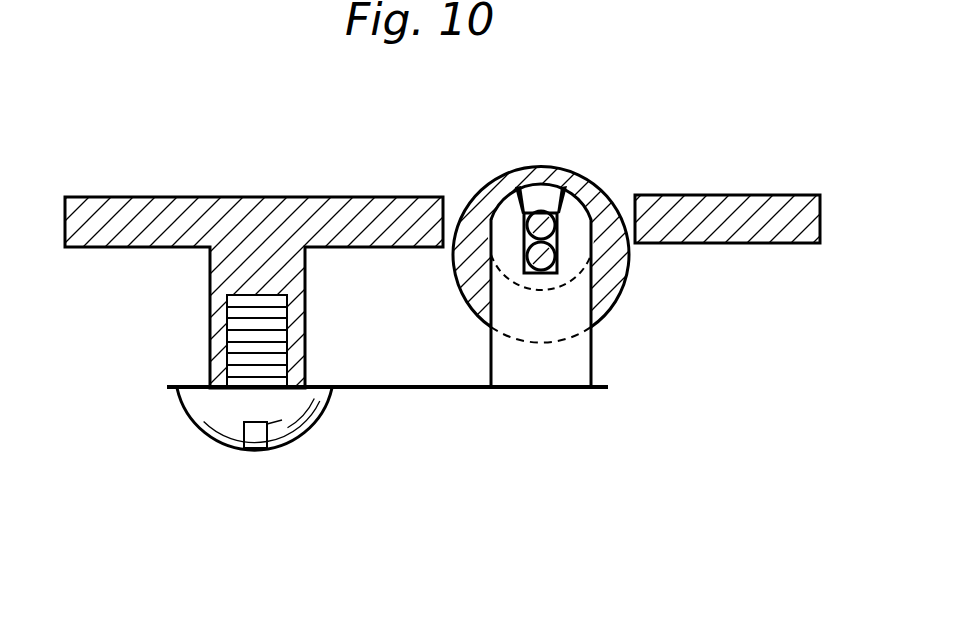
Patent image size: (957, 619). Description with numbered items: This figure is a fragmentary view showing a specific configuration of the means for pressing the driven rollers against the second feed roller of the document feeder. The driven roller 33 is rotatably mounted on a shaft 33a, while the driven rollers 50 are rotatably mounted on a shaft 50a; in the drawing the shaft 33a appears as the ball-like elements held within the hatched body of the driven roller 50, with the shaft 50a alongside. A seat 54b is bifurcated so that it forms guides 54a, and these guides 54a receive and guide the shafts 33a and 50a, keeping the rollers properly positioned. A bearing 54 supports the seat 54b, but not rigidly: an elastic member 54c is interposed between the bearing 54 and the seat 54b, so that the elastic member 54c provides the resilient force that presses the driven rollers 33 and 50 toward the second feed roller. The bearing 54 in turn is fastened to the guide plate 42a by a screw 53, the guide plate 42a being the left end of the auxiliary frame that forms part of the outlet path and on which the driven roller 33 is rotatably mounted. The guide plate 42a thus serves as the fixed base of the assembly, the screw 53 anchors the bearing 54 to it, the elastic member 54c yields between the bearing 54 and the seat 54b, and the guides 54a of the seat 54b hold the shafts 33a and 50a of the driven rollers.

The guide plate 42a is at (103, 214).
The screw 53 is at (287, 425).
The driven roller 50 is at (615, 277).
The shaft 50a is at (593, 190).
The bearing 54 is at (390, 303).
The guides 54a is at (525, 190).
The seat 54b is at (558, 368).
The elastic member 54c is at (437, 390).
The driven roller 33 is at (510, 184).
The shaft 33a is at (532, 223).